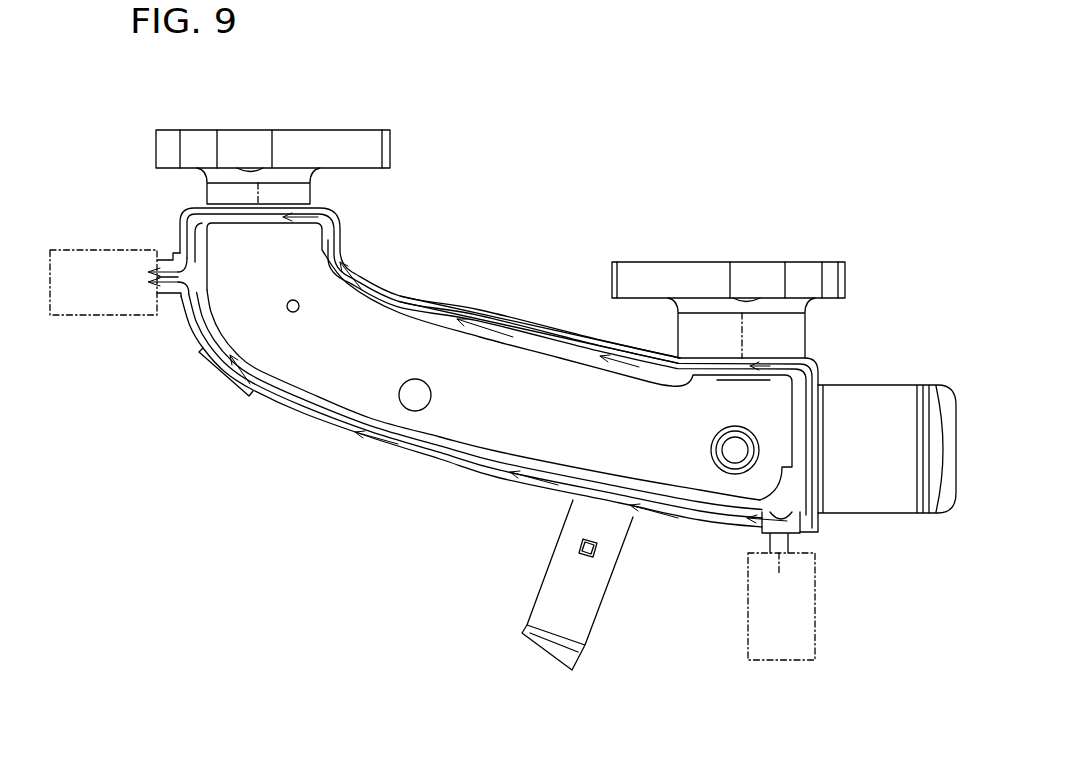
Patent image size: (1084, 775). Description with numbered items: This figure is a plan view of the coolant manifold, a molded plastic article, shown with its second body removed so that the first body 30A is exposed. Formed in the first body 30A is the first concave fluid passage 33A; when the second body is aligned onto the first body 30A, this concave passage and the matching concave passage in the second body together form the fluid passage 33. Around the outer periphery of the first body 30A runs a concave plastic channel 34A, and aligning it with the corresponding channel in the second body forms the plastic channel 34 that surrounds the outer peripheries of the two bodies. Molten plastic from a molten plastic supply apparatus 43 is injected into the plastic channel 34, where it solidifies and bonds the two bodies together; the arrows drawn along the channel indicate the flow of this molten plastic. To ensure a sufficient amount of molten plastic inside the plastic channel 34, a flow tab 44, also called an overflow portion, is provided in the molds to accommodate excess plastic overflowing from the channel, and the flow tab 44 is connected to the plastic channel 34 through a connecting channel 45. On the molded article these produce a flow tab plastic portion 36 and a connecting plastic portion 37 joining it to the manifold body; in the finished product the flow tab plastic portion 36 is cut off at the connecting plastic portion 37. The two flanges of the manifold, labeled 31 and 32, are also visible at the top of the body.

The first body 30A is at (480, 290).
The first flange 31 is at (797, 272).
The second flange 32 is at (345, 143).
The first concave fluid passage 33A is at (383, 345).
The fluid passage 33 is at (499, 361).
The concave plastic channel 34A is at (545, 322).
The plastic channel 34 is at (539, 329).
The molten plastic supply apparatus 43 is at (815, 606).
The flow tab 44 is at (100, 316).
The flow tab plastic portion 36 is at (114, 282).
The connecting channel 45 is at (173, 292).
The connecting plastic portion 37 is at (163, 281).